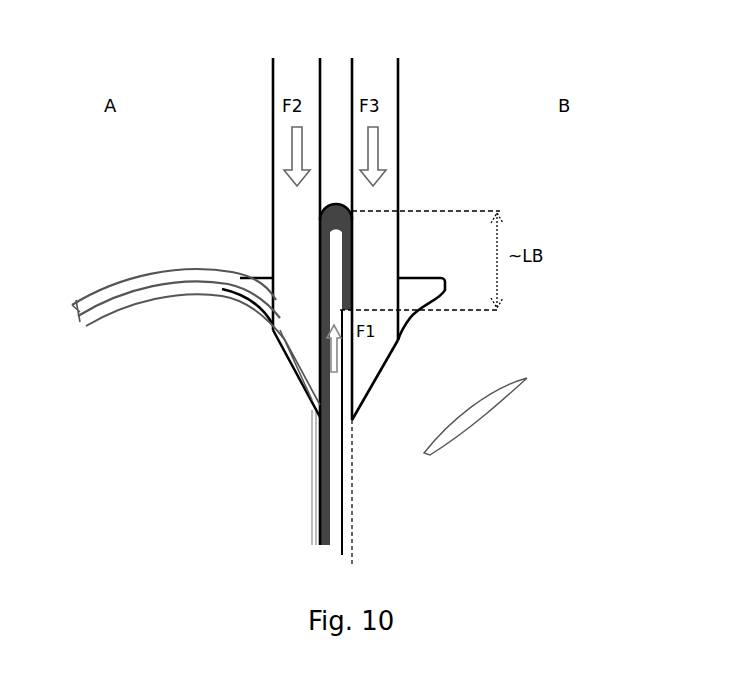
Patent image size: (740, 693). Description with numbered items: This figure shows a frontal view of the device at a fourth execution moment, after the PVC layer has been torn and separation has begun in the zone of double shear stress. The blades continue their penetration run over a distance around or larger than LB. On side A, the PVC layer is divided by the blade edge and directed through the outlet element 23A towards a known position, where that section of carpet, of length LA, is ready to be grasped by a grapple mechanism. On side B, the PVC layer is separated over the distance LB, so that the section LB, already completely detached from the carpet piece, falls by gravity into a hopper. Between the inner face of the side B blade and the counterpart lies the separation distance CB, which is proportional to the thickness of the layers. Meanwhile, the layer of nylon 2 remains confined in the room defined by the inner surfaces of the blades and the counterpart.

The layer of nylon 2 is at (355, 211).
The outlet element 23A is at (253, 276).
The left atrium / flow region A LA is at (205, 297).
The section LB is at (462, 414).
The separation distance CB is at (352, 565).